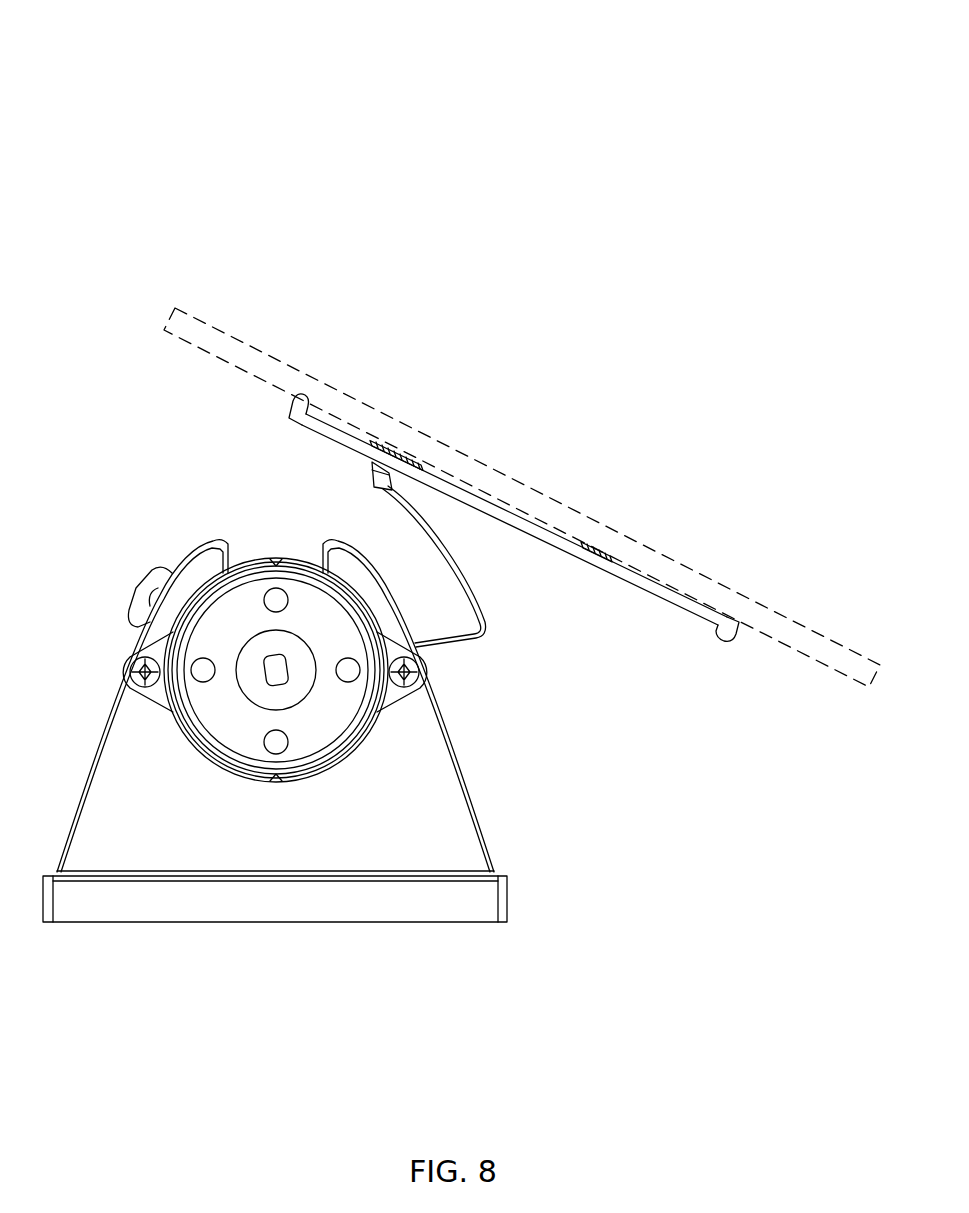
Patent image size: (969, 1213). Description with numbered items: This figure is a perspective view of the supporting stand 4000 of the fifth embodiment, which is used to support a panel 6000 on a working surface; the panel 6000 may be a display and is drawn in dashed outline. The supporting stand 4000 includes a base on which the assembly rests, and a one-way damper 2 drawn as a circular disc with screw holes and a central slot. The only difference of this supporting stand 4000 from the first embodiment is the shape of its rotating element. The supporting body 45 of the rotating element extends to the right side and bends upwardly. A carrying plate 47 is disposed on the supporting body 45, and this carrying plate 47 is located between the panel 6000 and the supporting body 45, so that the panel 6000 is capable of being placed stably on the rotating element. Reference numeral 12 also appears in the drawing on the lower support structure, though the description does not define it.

The supporting stand 4000 is at (212, 39).
The panel 6000 is at (304, 373).
The one-way damper 2 is at (222, 722).
The base support 12 is at (122, 819).
The supporting body 45 is at (481, 683).
The carrying plate 47 is at (682, 618).